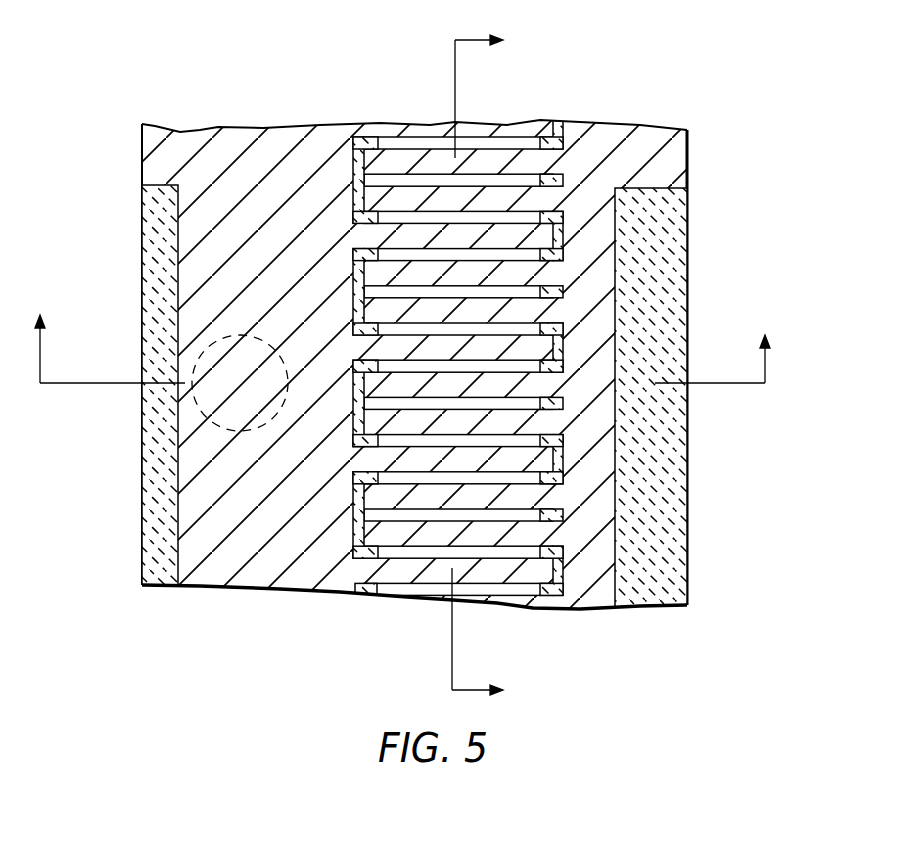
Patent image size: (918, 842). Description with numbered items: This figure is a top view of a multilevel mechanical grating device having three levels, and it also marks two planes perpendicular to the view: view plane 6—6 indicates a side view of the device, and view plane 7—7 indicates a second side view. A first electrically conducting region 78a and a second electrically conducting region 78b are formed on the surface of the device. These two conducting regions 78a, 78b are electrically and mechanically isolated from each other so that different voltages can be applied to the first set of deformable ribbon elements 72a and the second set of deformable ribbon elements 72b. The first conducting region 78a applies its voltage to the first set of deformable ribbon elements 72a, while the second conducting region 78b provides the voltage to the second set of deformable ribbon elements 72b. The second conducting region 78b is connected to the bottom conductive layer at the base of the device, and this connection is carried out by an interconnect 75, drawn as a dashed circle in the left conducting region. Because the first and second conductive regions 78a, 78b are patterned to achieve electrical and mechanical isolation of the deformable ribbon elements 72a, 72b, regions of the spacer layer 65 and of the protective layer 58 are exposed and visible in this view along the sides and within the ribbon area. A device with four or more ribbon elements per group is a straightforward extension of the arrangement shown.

The protective layer 58 is at (515, 297).
The first set of deformable ribbon elements 72a is at (513, 277).
The second set of deformable ribbon elements 72b is at (390, 350).
The interconnect 75 is at (197, 422).
The spacer layer 65 is at (165, 522).
The first electrically conducting region 78a is at (588, 582).
The second electrically conducting region 78b is at (252, 570).
The view plane 6- 6 is at (403, 332).
The view plane 7- 7 is at (486, 365).